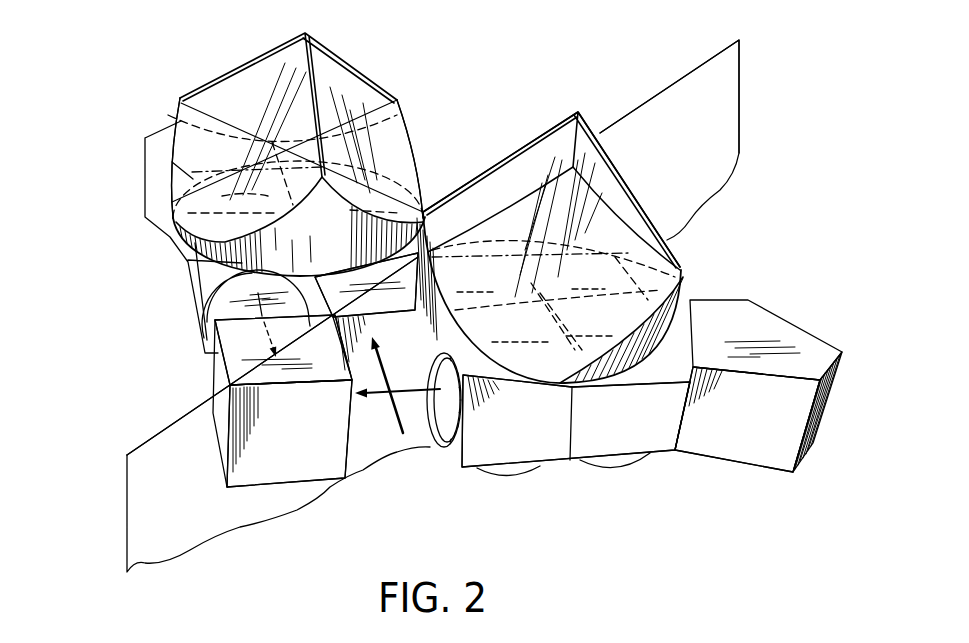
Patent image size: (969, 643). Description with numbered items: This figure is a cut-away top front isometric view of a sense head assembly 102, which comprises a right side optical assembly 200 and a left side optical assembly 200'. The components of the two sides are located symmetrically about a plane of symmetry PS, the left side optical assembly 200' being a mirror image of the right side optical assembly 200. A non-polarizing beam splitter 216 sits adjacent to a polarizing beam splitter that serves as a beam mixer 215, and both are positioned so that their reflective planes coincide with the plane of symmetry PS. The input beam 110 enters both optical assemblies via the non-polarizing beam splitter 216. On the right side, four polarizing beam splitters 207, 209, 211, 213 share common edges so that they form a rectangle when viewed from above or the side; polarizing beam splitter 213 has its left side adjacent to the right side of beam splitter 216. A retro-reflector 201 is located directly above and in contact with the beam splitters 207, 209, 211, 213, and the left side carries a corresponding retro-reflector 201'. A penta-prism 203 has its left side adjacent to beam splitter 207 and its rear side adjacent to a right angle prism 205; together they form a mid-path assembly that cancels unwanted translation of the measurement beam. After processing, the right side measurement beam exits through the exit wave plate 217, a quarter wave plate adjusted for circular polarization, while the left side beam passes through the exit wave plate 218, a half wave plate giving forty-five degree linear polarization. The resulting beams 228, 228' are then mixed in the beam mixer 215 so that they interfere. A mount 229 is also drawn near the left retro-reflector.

The sense head assembly 102 is at (575, 67).
The right side optical assembly 200 is at (621, 264).
The left side optical assembly 200' is at (359, 213).
The retro-reflector 201 is at (567, 247).
The retro-reflector 201' is at (315, 154).
The penta-prism 203 is at (772, 331).
The right angle prism 205 is at (710, 288).
The polarizing beam splitter 207 is at (591, 323).
The polarizing beam splitter 209 is at (520, 326).
The polarizing beam splitter 211 is at (597, 275).
The polarizing beam splitter 213 is at (482, 278).
The beam mixer 215 is at (292, 467).
The non-polarizing beam splitter 216 is at (363, 360).
The exit wave plate 217 is at (443, 403).
The exit wave plate 218 is at (235, 294).
The beam 228 is at (522, 459).
The beam 228' is at (164, 359).
The prism mount 229 is at (197, 188).
The input beam 110 is at (393, 423).
The plane of symmetry PS is at (735, 93).